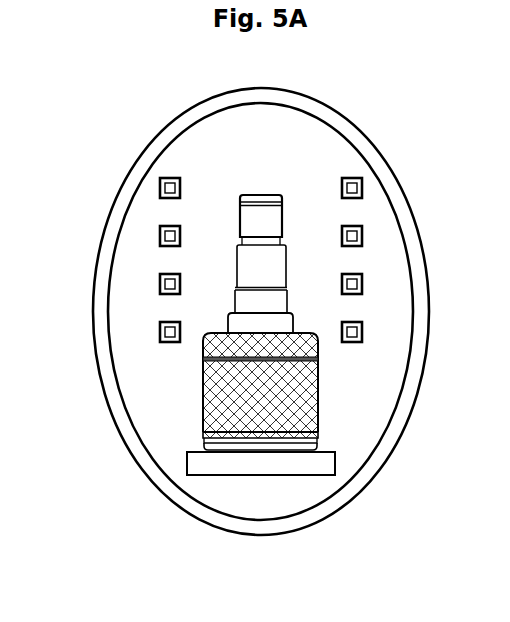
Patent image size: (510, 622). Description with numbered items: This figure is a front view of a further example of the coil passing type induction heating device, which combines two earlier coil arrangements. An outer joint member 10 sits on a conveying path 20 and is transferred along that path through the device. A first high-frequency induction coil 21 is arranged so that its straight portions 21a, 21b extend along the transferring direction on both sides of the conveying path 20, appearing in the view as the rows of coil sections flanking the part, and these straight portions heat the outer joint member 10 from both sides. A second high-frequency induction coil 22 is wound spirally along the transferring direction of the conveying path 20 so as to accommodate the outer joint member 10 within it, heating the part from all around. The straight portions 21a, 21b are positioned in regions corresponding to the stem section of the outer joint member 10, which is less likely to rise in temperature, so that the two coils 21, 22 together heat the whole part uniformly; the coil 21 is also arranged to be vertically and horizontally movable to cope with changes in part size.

The outer joint member 10 is at (292, 225).
The conveying path 20 is at (280, 465).
The high-frequency induction coil (first coil portion) 21 is at (257, 212).
The straight portion 21a is at (366, 235).
The straight portion 21b is at (168, 238).
The high-frequency induction coil (second coil portion) 22 is at (378, 150).